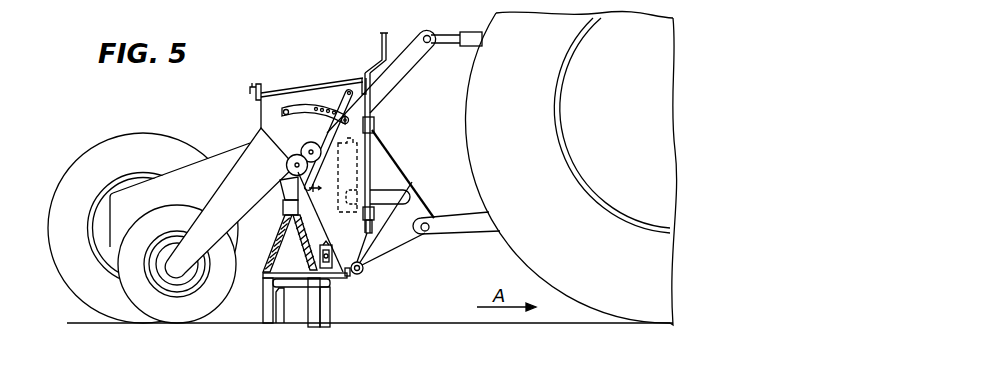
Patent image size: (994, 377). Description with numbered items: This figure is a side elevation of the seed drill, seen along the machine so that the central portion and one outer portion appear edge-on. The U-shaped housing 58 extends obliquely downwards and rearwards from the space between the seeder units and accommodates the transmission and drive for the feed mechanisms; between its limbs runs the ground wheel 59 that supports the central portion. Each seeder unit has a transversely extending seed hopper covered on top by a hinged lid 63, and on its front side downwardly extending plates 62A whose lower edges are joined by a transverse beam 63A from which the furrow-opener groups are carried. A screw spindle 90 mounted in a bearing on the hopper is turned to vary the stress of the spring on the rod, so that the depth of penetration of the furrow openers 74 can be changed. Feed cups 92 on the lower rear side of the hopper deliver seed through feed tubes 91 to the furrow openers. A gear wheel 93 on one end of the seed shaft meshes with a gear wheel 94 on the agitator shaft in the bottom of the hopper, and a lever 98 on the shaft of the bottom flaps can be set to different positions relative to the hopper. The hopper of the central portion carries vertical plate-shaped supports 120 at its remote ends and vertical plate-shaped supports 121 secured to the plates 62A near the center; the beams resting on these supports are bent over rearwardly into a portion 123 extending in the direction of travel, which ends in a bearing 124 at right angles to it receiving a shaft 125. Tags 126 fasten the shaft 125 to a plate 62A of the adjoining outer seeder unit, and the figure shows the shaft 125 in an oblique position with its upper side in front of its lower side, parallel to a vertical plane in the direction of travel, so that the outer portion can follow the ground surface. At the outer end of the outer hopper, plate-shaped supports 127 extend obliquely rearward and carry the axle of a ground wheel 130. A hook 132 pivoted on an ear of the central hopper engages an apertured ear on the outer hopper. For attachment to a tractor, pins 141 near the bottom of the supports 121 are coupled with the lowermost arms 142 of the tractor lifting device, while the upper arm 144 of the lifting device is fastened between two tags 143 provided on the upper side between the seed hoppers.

The housing 58 is at (233, 151).
The ground wheel 59 is at (93, 150).
The plates 62A is at (368, 262).
The lid 63 is at (311, 88).
The beam 63A is at (355, 277).
The furrow openers 74 is at (283, 328).
The screw spindle 90 is at (382, 44).
The feed tube 91 is at (306, 256).
The feed cup 92 is at (283, 196).
The gear wheel 93 is at (287, 167).
The gear wheel 94 is at (310, 140).
The lever 98 is at (356, 84).
The vertical plate-shaped supports 120 is at (413, 188).
The vertical plate-shaped supports 121 is at (433, 212).
The bent-over portion 123 is at (412, 180).
The bearing 124 is at (408, 197).
The shaft 125 is at (338, 216).
The tags 126 is at (383, 141).
The plate-shaped supports 127 is at (222, 186).
The ground wheel 130 is at (175, 323).
The hook 132 is at (253, 84).
The pins 141 is at (428, 236).
The lowermost arms 142 is at (460, 233).
The tags 143 is at (409, 68).
The upper arm 144 is at (462, 44).